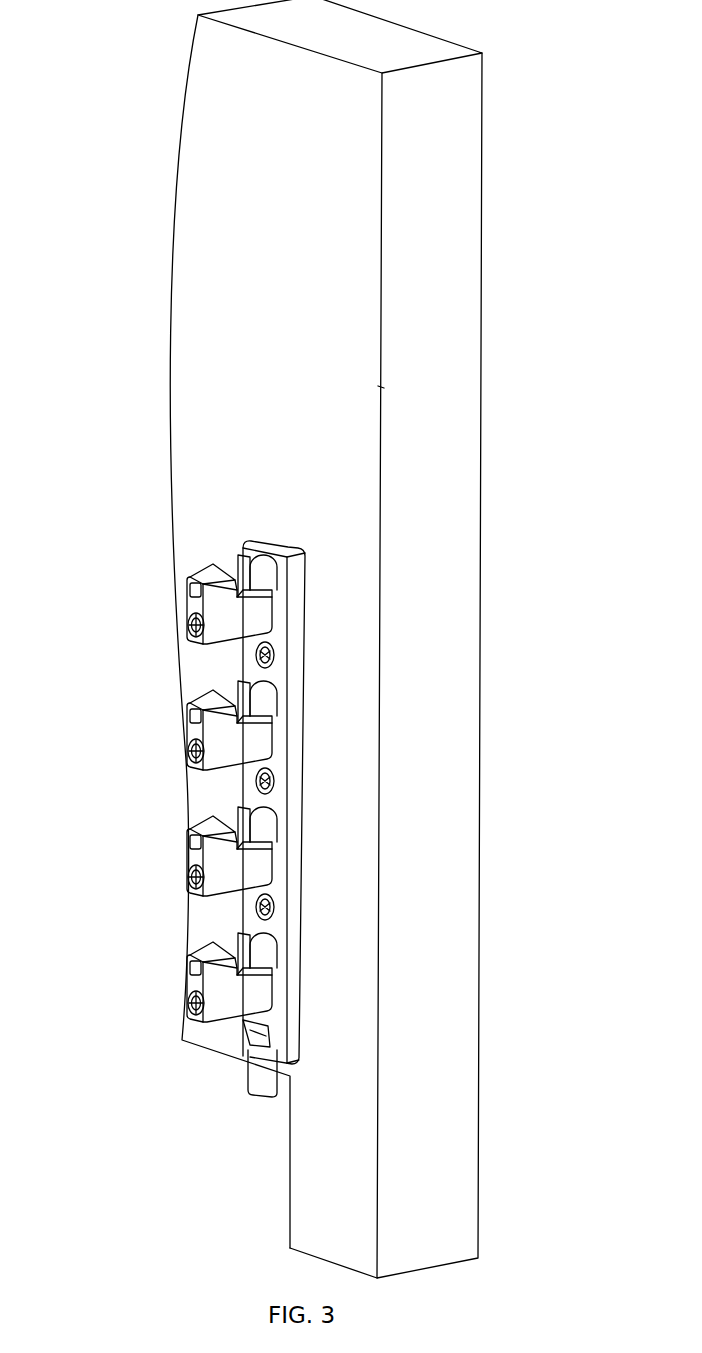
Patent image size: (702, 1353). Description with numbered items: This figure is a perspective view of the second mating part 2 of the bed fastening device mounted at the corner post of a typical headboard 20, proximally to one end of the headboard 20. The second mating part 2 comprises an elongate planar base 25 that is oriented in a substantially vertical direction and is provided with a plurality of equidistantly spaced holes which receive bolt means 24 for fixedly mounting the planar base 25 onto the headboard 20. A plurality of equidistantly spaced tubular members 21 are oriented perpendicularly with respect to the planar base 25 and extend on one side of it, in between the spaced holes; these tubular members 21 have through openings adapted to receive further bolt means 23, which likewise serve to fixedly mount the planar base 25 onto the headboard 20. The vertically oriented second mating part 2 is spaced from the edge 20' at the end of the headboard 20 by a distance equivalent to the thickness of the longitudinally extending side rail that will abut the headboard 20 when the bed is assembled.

The headboard 20 is at (378, 639).
The edge of the headboard component 20' is at (483, 415).
The second mating part 2 is at (360, 722).
The planar base 25 is at (298, 612).
The bolt means 24 is at (275, 657).
The tubular members 21 is at (145, 630).
The further bolt means 23 is at (188, 634).